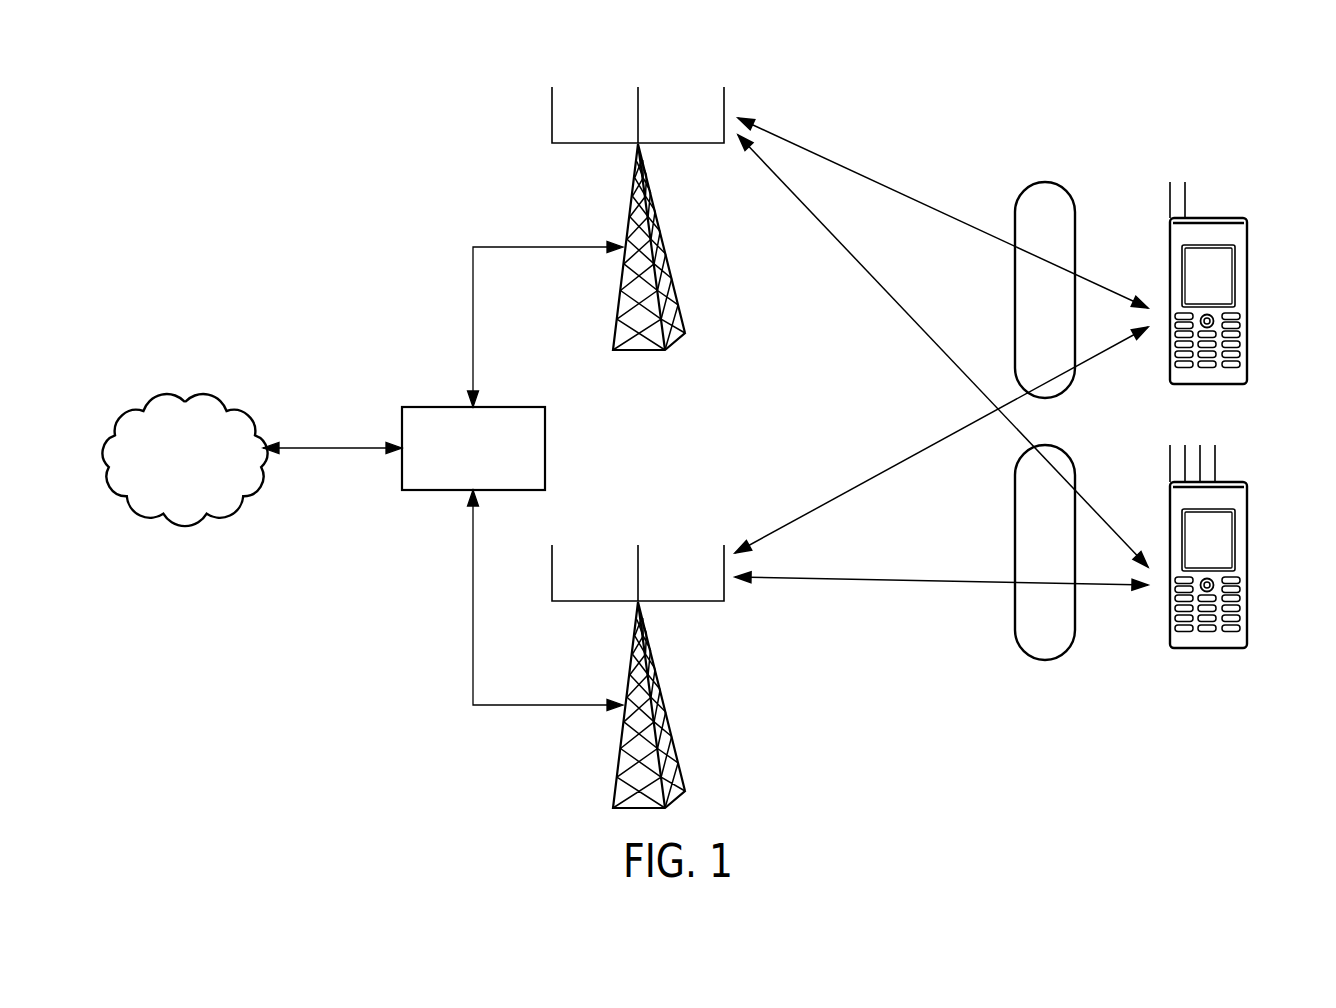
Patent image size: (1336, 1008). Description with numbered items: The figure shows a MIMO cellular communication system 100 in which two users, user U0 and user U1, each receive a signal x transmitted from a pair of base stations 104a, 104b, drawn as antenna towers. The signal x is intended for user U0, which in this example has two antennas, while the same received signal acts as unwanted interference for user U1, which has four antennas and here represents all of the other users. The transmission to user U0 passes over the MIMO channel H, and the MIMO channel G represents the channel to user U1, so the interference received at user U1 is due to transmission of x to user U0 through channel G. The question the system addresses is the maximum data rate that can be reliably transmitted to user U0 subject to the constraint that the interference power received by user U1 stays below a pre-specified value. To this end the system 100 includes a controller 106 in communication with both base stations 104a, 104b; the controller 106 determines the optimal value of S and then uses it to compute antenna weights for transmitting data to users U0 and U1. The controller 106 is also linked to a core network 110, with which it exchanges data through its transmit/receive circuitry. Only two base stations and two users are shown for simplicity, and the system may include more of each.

The MIMO cellular communication system 100 is at (278, 136).
The base station 104a is at (665, 243).
The base station 104b is at (665, 700).
The controller 106 is at (545, 447).
The core network 110 is at (197, 404).
The user U0 is at (1212, 232).
The user U1 is at (1212, 495).
The MIMO channel H is at (1045, 272).
The MIMO channel G is at (1045, 536).